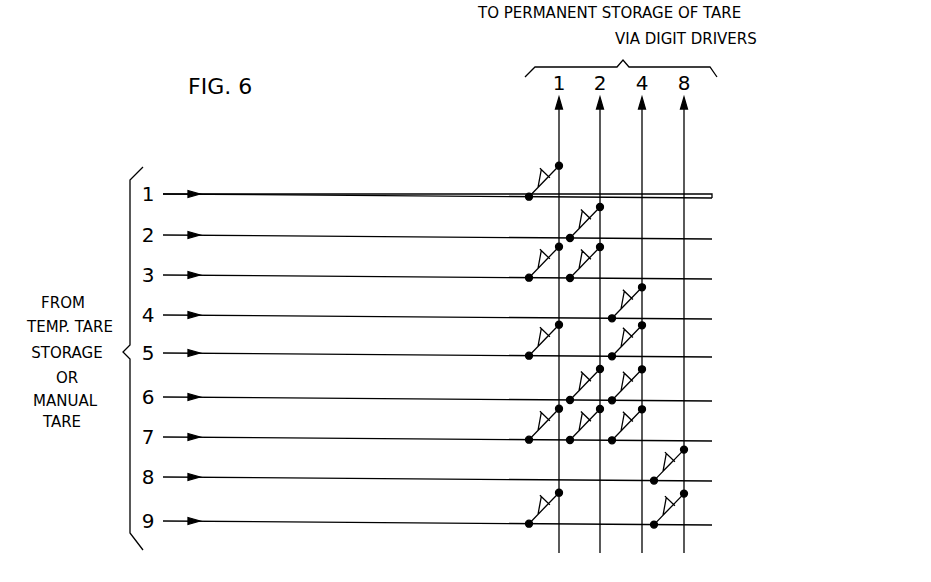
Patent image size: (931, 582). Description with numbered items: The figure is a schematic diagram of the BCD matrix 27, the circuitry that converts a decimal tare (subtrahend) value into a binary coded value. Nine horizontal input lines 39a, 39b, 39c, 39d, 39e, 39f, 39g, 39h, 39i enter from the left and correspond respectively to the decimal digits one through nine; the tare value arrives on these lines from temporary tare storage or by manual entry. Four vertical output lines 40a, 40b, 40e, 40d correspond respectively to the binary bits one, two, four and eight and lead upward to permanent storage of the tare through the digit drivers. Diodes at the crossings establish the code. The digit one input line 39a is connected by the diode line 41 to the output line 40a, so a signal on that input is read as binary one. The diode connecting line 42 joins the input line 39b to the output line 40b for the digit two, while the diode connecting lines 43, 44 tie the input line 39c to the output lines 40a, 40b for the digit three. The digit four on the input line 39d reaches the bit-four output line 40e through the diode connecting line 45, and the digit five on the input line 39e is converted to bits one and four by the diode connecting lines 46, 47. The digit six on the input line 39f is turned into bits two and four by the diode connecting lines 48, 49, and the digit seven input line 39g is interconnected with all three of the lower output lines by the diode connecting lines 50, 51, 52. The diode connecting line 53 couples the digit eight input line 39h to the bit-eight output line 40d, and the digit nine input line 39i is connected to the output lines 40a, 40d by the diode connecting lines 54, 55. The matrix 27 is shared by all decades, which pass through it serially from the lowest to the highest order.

The BCD matrix 27 is at (115, 460).
The input line 39a is at (323, 194).
The input line 39b is at (295, 235).
The input line 39c is at (295, 275).
The input line 39d is at (295, 315).
The input line 39e is at (295, 353).
The input line 39f is at (295, 397).
The input line 39g is at (295, 437).
The input line 39h is at (295, 477).
The input line 39i is at (295, 521).
The output line 40a is at (557, 119).
The output line 40b is at (600, 148).
The output line 40e is at (642, 152).
The output line 40d is at (684, 126).
The diode line 41 is at (556, 166).
The diode connecting line 42 is at (597, 207).
The diode connecting line 43 is at (535, 270).
The diode connecting line 44 is at (600, 246).
The diode connecting line 45 is at (641, 286).
The diode connecting line 46 is at (536, 349).
The diode connecting line 47 is at (642, 324).
The diode connecting line 48 is at (572, 391).
The diode connecting line 49 is at (642, 368).
The diode connecting line 50 is at (536, 433).
The diode connecting line 51 is at (570, 440).
The diode connecting line 52 is at (612, 440).
The diode connecting line 53 is at (684, 449).
The diode connecting line 54 is at (529, 523).
The diode connecting line 55 is at (654, 524).